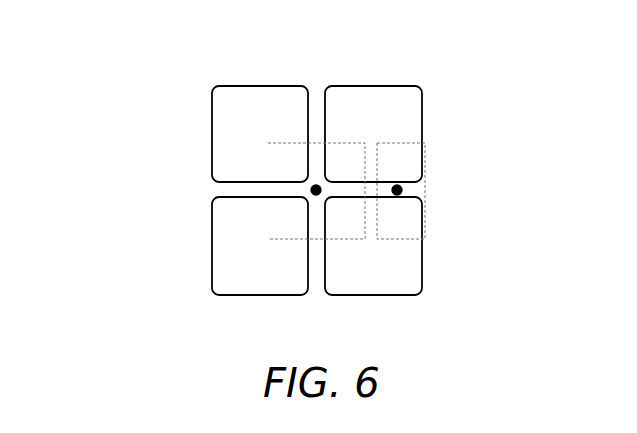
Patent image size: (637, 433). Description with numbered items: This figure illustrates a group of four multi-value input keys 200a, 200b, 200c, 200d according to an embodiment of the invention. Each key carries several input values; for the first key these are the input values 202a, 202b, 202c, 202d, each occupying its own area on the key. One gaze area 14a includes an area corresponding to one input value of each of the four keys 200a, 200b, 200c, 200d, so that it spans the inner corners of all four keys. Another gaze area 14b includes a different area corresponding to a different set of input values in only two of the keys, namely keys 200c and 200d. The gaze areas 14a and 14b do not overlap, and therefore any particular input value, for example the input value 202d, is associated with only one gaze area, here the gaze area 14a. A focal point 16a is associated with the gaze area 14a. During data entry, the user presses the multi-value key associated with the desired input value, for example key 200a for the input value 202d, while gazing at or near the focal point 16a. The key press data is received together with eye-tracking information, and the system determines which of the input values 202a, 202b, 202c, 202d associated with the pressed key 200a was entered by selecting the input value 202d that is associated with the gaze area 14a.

The multi-value input key 200a is at (192, 97).
The multi-value input key 200b is at (212, 260).
The multi-value input key 200c is at (422, 132).
The multi-value input key 200d is at (422, 273).
The input value 202a is at (220, 103).
The input value 202b is at (228, 152).
The input value 202c is at (297, 104).
The input value 202d is at (274, 163).
The gaze area 14a is at (288, 238).
The gaze area 14b is at (422, 200).
The focal point 16a is at (316, 194).